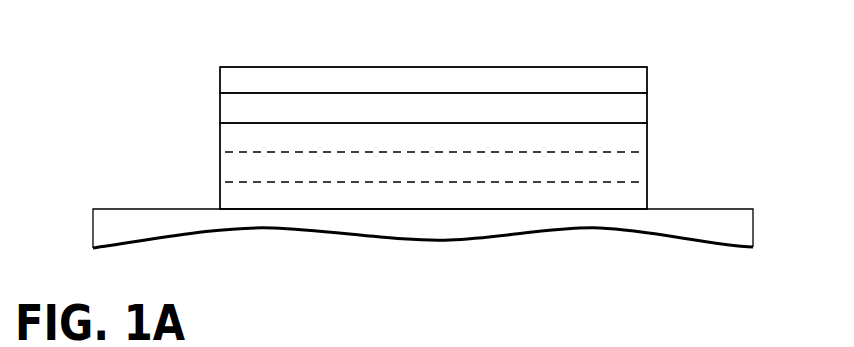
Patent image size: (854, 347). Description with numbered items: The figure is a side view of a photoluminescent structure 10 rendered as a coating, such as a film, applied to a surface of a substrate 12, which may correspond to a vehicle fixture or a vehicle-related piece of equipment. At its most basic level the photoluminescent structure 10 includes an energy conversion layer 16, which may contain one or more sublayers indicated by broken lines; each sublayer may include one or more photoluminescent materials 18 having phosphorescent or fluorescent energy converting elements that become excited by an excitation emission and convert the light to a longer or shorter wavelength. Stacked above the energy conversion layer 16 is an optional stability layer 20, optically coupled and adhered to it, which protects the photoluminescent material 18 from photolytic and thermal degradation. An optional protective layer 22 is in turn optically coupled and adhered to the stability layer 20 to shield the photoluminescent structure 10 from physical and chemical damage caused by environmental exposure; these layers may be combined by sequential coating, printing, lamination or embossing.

The photoluminescent structure 10 is at (581, 41).
The substrate 12 is at (695, 209).
The energy conversion layer 16 is at (220, 163).
The photoluminescent material 18 is at (598, 168).
The stability layer 20 is at (220, 110).
The protective layer 22 is at (317, 67).